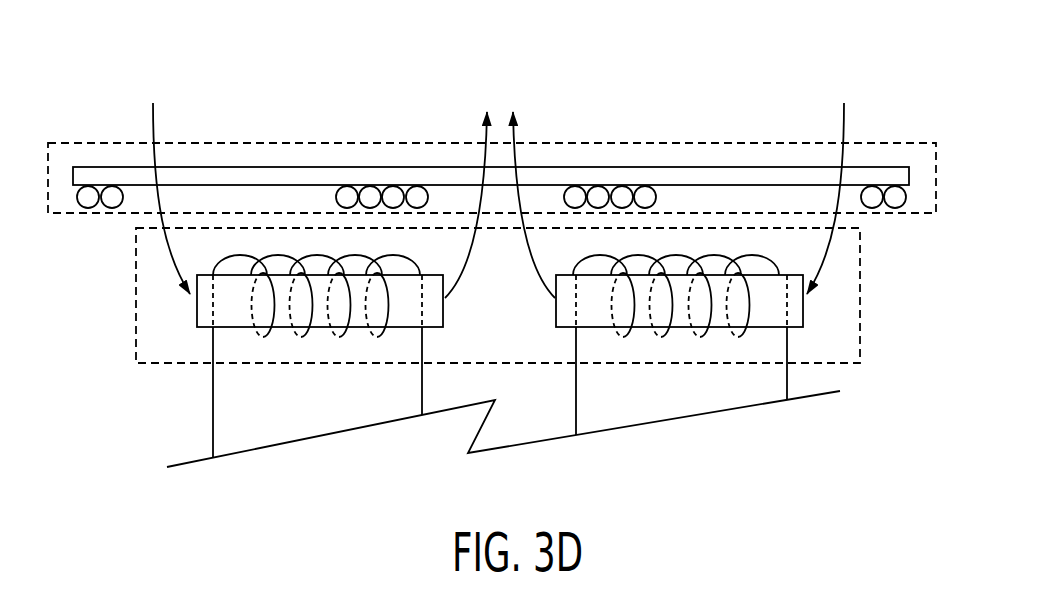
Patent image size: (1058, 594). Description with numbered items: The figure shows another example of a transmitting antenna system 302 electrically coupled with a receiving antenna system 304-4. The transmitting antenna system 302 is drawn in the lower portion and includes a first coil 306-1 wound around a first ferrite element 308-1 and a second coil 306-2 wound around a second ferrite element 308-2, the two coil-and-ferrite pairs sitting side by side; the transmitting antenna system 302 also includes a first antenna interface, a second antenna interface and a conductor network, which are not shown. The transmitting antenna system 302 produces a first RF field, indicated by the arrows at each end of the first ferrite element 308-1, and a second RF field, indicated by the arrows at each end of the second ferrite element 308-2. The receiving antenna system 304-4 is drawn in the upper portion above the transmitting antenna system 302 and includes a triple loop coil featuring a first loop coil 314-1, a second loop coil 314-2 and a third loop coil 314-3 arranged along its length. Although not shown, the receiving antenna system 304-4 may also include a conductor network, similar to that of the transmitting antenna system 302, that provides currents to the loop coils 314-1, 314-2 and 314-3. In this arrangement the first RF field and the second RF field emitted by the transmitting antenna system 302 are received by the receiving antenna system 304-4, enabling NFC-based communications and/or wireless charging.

The transmitting antenna system 302 is at (135, 292).
The receiving antenna system 304-4 is at (83, 143).
The first coil 306-1 is at (338, 337).
The second coil 306-2 is at (699, 337).
The first ferrite element 308-1 is at (195, 318).
The second ferrite element 308-2 is at (803, 322).
The first loop coil 314-1 is at (227, 197).
The second loop coil 314-2 is at (545, 195).
The third loop coil 314-3 is at (853, 197).